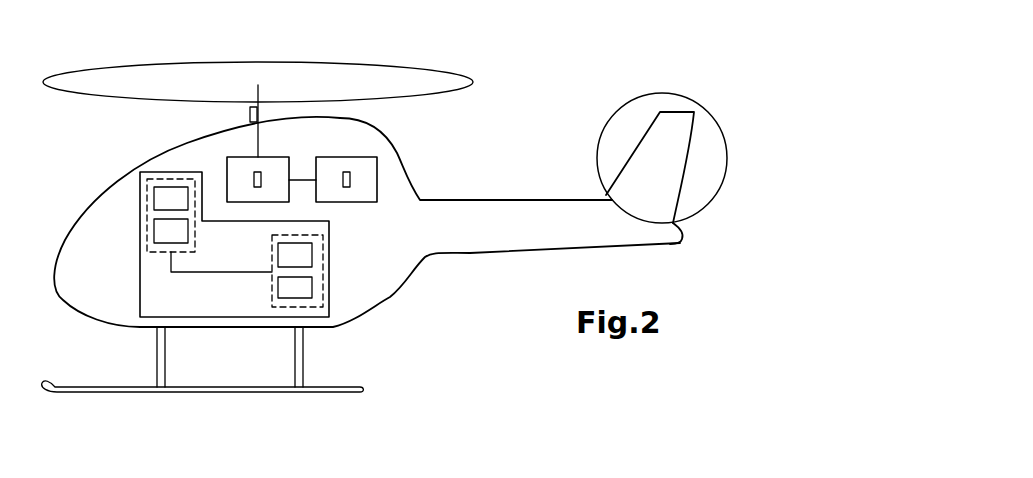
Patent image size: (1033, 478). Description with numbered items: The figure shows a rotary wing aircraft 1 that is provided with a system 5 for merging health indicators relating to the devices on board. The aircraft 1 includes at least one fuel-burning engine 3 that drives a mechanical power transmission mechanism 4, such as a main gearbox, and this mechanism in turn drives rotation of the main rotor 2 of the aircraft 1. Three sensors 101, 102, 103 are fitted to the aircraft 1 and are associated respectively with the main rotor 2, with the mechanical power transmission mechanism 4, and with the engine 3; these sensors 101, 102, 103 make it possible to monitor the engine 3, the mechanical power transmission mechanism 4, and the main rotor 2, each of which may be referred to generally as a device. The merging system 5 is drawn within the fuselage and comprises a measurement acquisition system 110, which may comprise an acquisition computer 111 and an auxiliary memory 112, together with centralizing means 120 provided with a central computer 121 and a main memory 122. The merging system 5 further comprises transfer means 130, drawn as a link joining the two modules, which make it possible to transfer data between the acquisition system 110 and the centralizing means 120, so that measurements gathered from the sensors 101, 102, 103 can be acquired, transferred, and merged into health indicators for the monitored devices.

The rotary wing aircraft 1 is at (428, 312).
The main rotor 2 is at (418, 66).
The fuel-burning engine 3 is at (367, 157).
The mechanical power transmission mechanism 4 is at (275, 157).
The merging system 5 is at (141, 285).
The sensor 101 is at (249, 116).
The sensor 102 is at (254, 180).
The sensor 103 is at (350, 180).
The measurement acquisition system 110 is at (147, 221).
The acquisition computer 111 is at (155, 200).
The auxiliary memory 112 is at (155, 232).
The centralizing means 120 is at (323, 273).
The central computer 121 is at (312, 257).
The main memory 122 is at (312, 288).
The transfer means 130 is at (237, 273).